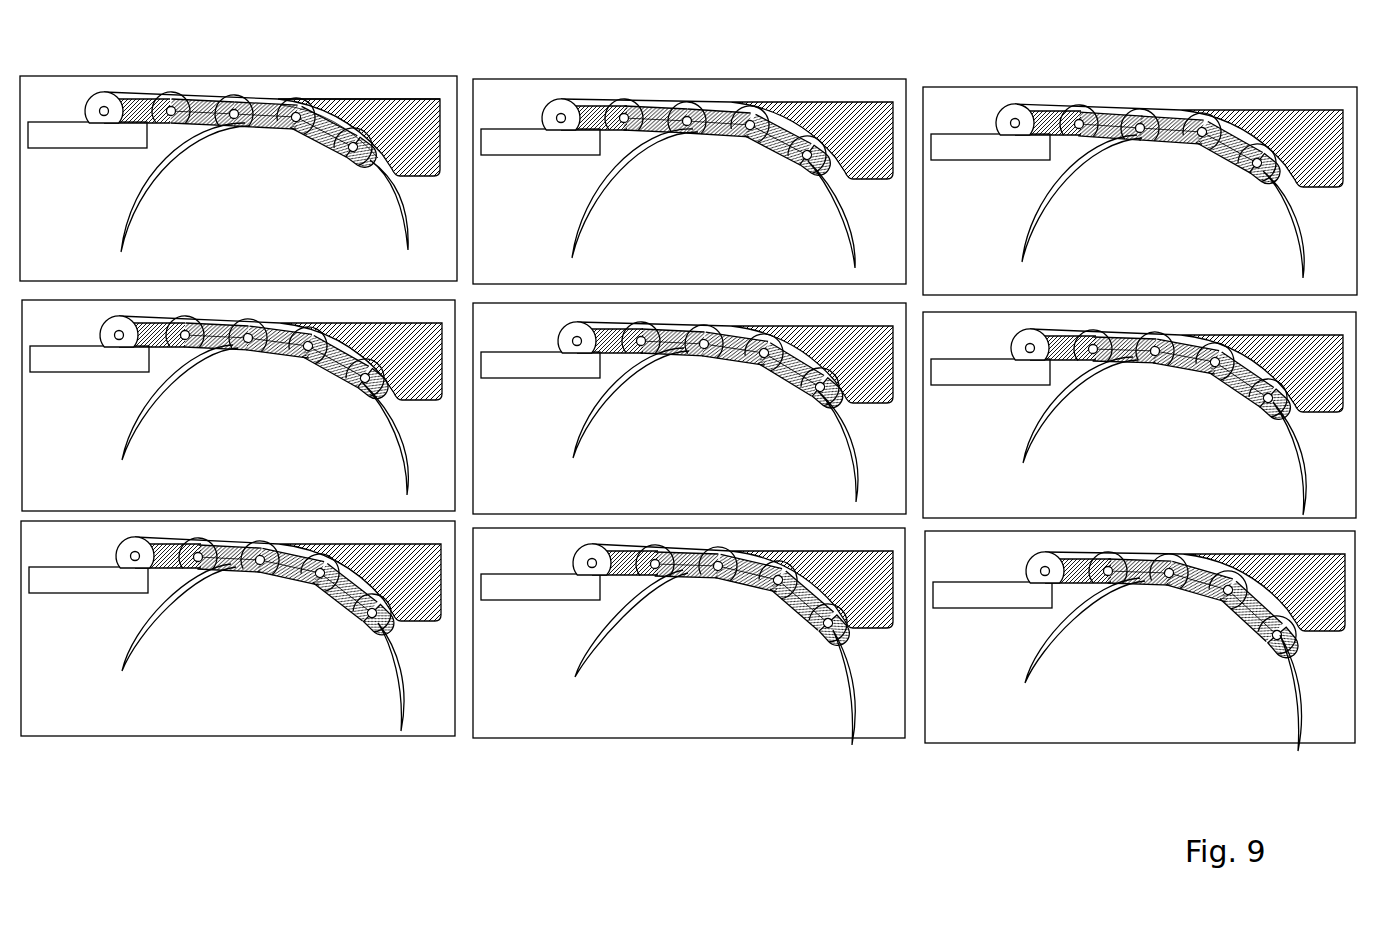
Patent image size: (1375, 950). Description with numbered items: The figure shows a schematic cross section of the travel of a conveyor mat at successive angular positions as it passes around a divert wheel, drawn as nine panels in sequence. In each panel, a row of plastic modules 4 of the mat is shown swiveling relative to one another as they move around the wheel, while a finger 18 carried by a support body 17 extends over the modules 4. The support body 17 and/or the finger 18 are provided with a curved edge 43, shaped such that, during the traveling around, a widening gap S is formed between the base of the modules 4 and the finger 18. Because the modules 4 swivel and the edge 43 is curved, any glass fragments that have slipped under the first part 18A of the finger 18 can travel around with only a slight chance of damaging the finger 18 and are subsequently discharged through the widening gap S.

The plastic modules 4 is at (316, 139).
The support body 17 is at (398, 108).
The finger 18 is at (223, 125).
The first part of the finger 18A is at (283, 99).
The gap S is at (340, 116).
The curved edge 43 is at (441, 99).